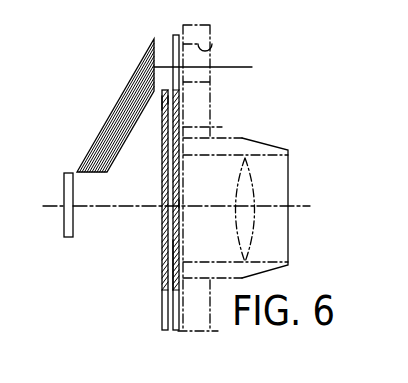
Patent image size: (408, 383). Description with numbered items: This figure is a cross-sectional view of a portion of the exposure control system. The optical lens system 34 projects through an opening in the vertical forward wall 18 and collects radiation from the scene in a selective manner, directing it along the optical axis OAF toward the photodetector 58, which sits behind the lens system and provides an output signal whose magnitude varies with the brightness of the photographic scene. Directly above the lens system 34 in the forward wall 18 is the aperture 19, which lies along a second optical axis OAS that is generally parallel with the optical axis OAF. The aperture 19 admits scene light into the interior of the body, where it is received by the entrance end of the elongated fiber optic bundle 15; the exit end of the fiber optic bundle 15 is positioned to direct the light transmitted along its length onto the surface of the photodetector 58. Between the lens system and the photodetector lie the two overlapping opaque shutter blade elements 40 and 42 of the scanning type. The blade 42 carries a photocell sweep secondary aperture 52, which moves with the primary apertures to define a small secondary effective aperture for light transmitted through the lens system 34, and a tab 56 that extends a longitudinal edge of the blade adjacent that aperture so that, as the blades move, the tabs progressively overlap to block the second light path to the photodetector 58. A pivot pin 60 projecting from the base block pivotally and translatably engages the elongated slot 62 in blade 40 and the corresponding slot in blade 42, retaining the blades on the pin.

The fiber optic bundle 15 is at (121, 100).
The vertical forward wall 18 is at (215, 127).
The aperture 19 is at (212, 44).
The optical lens system 34 is at (281, 148).
The shutter blade element 40 is at (163, 180).
The shutter blade element 42 is at (173, 239).
The photocell sweep secondary aperture 52 is at (181, 201).
The tab 56 is at (173, 35).
The photodetector 58 is at (63, 185).
The pivot pin 60 is at (167, 104).
The elongated slot 62 is at (162, 99).
The optical axis OAS is at (223, 68).
The optical axis OAF is at (195, 209).